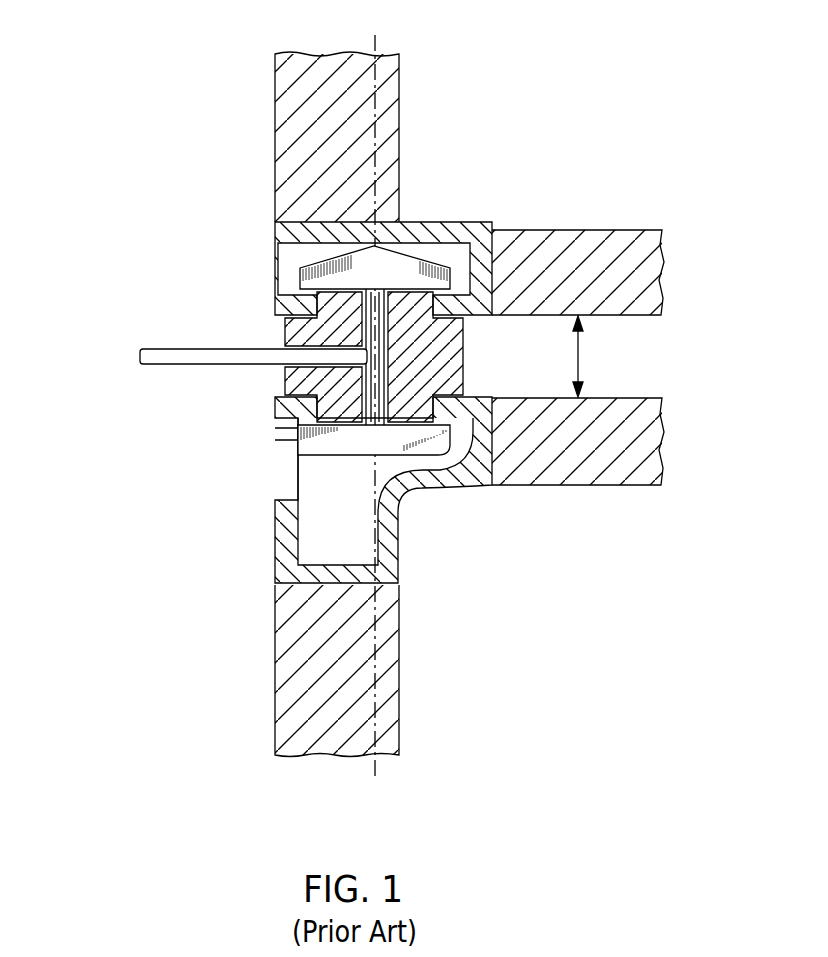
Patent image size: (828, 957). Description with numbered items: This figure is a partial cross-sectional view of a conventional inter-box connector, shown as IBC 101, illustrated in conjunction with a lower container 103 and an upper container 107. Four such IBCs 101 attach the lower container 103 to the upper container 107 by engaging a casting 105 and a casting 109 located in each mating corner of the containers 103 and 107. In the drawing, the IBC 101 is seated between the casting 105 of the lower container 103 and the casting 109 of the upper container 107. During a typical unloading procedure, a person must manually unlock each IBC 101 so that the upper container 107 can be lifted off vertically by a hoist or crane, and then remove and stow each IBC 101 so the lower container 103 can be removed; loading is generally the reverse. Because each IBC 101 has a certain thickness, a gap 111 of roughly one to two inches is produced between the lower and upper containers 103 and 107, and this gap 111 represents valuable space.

The IBC 101 is at (200, 392).
The lower container 103 is at (275, 652).
The casting 105 is at (277, 408).
The upper container 107 is at (276, 83).
The casting 109 is at (277, 233).
The gap 111 is at (578, 352).